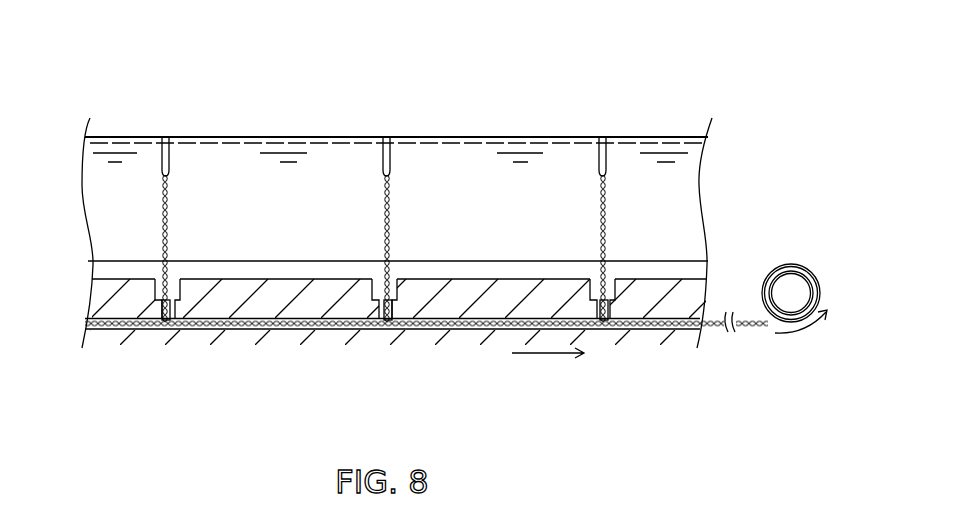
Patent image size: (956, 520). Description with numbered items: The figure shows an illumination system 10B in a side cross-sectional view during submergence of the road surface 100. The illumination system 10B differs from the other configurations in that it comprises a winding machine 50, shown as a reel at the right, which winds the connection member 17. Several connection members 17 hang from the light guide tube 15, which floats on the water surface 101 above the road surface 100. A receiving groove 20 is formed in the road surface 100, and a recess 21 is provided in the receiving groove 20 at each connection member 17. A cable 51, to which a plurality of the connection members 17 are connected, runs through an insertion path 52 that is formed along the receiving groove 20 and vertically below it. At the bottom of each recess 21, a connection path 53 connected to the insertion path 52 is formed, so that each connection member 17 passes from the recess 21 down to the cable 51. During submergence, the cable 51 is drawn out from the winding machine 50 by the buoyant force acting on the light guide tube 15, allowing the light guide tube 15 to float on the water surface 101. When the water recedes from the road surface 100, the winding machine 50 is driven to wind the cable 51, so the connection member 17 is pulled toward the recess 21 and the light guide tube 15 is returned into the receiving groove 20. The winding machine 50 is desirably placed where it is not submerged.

The illumination system 10B is at (712, 58).
The light guide tube 15 is at (300, 137).
The connection member 17 is at (172, 183).
The receiving groove 20 is at (123, 270).
The recess 21 is at (178, 280).
The winding machine 50 is at (795, 280).
The cable 51 is at (282, 330).
The insertion path 52 is at (218, 330).
The connection path 53 is at (172, 330).
The road surface 100 is at (488, 261).
The water surface 101 is at (540, 137).